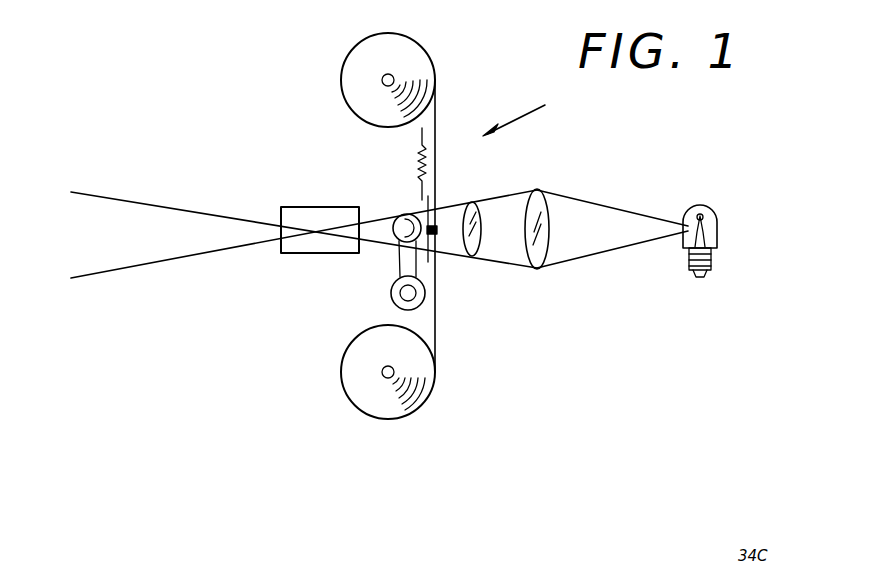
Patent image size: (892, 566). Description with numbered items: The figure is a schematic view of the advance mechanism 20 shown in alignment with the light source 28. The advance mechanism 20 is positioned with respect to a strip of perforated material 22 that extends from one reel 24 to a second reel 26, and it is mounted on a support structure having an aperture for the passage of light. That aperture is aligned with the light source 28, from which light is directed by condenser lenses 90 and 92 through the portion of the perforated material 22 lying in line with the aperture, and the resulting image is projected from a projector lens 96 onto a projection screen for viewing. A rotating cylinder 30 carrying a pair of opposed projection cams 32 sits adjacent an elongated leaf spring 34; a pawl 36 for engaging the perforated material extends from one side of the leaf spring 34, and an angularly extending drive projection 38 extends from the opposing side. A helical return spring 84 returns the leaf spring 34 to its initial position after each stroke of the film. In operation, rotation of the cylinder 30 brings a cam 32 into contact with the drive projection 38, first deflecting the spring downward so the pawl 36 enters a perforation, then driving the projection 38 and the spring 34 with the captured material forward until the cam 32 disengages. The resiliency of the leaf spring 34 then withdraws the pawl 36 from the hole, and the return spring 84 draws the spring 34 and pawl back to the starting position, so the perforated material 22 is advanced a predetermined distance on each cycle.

The advance mechanism 20 is at (533, 112).
The strip of perforated material 22 is at (437, 320).
The reel 24 is at (412, 60).
The second reel 26 is at (393, 398).
The light source 28 is at (717, 228).
The rotating cylinder 30 is at (393, 213).
The projection cam 32 is at (424, 210).
The elongated leaf spring 34 is at (426, 282).
The pawl 36 is at (437, 242).
The drive projection 38 is at (434, 203).
The helical return spring 84 is at (420, 160).
The condenser lens 90 is at (545, 211).
The condenser lens 92 is at (476, 211).
The projector lens 96 is at (302, 248).